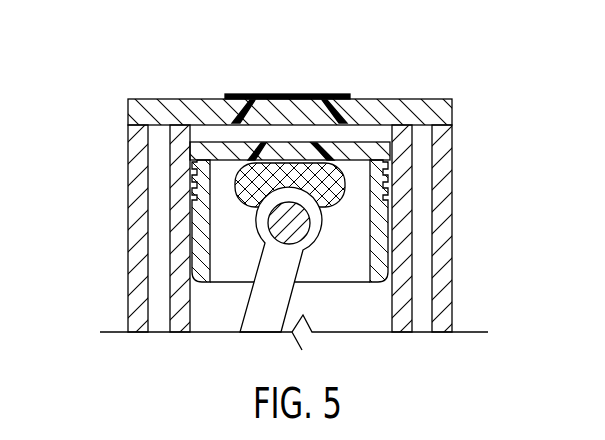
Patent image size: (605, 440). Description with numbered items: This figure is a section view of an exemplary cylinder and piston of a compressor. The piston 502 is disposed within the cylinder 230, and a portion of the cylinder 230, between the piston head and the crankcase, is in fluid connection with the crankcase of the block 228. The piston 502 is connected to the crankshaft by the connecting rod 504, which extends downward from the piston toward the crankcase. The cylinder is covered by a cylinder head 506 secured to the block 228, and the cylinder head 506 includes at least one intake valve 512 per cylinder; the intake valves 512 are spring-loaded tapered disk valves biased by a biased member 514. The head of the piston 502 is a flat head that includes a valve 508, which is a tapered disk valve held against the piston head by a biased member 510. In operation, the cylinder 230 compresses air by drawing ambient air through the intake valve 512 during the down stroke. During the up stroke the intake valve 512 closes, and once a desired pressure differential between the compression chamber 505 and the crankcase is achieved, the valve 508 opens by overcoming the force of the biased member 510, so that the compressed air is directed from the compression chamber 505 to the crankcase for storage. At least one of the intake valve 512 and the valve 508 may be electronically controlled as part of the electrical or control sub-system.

The block 228 is at (128, 210).
The cylinder 230 is at (347, 313).
The piston 502 is at (227, 240).
The connecting rod 504 is at (260, 307).
The compression chamber 505 is at (373, 130).
The cylinder head 506 is at (152, 98).
The valve 508 is at (325, 168).
The biased member 510 is at (332, 202).
The intake valve 512 is at (323, 100).
The biased member 514 is at (265, 97).